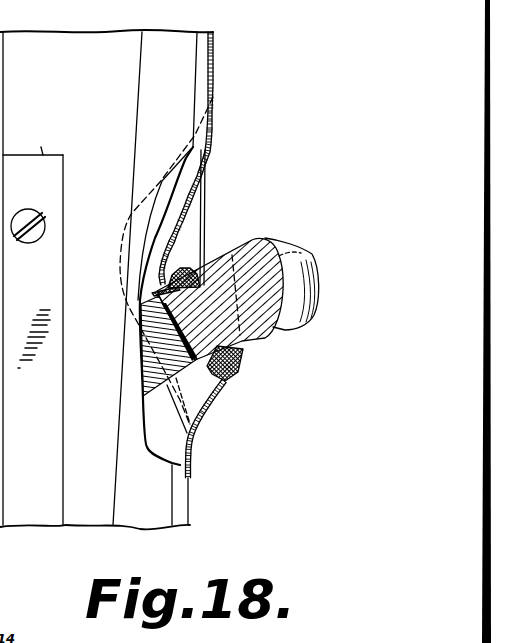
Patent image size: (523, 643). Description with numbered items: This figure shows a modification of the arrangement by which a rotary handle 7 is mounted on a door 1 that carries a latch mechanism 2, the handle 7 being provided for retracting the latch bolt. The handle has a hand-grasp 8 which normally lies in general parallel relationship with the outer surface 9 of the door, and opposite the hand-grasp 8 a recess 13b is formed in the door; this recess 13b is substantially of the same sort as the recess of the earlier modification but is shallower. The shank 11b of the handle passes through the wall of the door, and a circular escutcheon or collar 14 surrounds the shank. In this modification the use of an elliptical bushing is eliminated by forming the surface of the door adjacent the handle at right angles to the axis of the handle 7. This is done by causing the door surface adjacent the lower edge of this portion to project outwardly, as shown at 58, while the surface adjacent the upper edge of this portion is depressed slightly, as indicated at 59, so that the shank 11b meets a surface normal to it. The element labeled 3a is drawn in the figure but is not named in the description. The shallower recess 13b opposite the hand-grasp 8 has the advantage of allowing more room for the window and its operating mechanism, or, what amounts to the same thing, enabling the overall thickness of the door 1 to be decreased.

The door 1 is at (103, 43).
The outer surface of the door 9 is at (214, 73).
The latch mechanism 2 is at (43, 153).
The base plate 3a is at (50, 187).
The recess 13b is at (213, 193).
The shank of the handle 11b is at (156, 364).
The rotary handle 7 is at (272, 233).
The hand-grasp 8 is at (297, 262).
The depressed surface portion 59 is at (162, 254).
The escutcheon 14 is at (243, 357).
The outwardly projecting surface portion 58 is at (226, 379).